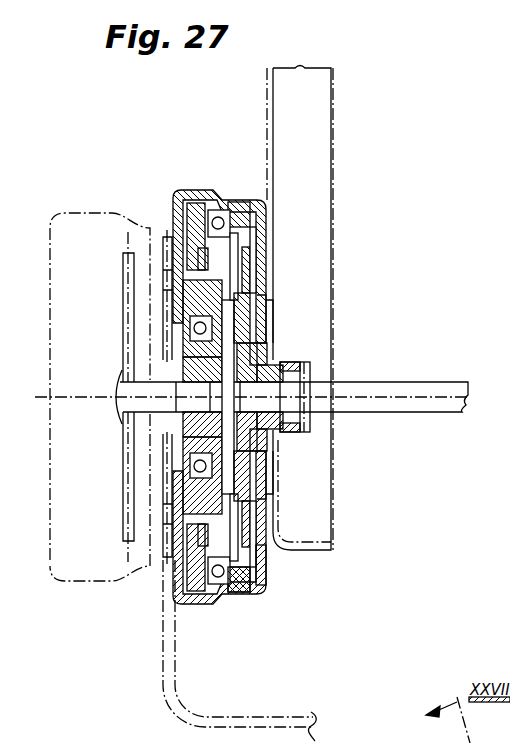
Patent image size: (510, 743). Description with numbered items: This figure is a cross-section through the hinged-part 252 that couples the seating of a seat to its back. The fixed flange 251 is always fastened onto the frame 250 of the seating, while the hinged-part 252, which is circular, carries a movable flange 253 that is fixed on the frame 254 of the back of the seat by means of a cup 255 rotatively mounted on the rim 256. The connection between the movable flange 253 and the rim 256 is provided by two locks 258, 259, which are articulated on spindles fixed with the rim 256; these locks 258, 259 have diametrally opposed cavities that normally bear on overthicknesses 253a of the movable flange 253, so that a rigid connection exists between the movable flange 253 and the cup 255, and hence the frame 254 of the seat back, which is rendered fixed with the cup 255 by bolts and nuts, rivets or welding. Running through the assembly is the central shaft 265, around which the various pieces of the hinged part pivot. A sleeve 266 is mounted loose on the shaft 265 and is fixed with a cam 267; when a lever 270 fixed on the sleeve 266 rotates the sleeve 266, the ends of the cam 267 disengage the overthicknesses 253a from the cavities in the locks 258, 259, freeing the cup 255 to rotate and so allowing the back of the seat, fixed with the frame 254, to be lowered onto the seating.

The frame of the seating 250 is at (170, 671).
The fixed flange 251 is at (170, 280).
The hinged-part 252 is at (240, 560).
The movable flange 253 is at (245, 205).
The overthicknesses 253a is at (273, 313).
The frame of the back of the seat 254 is at (320, 146).
The cup 255 is at (264, 574).
The rim 256 is at (206, 190).
The lock 258 is at (273, 260).
The lock 259 is at (257, 517).
The central shaft 265 is at (425, 392).
The sleeve 266 is at (289, 434).
The cam 267 is at (270, 348).
The lever 270 is at (297, 357).